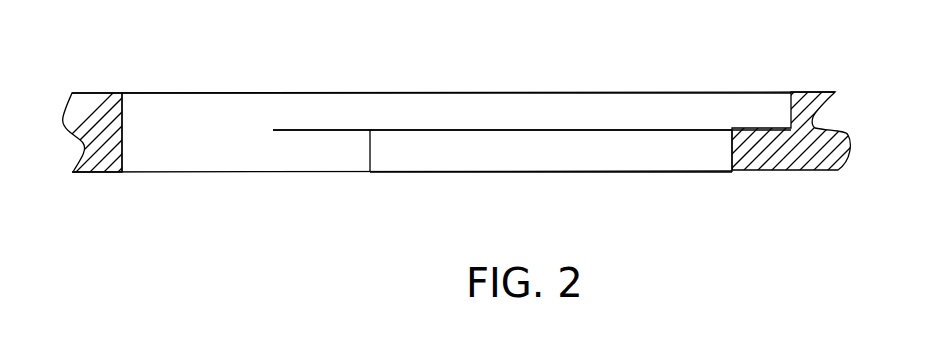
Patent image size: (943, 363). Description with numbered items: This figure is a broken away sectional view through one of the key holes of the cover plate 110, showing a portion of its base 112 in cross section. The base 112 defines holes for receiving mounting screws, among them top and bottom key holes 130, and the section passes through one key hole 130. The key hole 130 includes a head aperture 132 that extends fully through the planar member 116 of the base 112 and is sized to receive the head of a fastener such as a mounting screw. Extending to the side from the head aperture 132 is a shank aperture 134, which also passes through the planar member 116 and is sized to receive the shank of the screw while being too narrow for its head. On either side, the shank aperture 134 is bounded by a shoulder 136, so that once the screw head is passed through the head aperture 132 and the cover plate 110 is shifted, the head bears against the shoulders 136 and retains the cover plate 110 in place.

The cover plate 110 is at (366, 253).
The base 112 is at (145, 93).
The planar member 116 is at (98, 100).
The key hole 130 is at (307, 196).
The head aperture 132 is at (185, 148).
The shank aperture 134 is at (628, 153).
The shoulder 136 is at (757, 153).